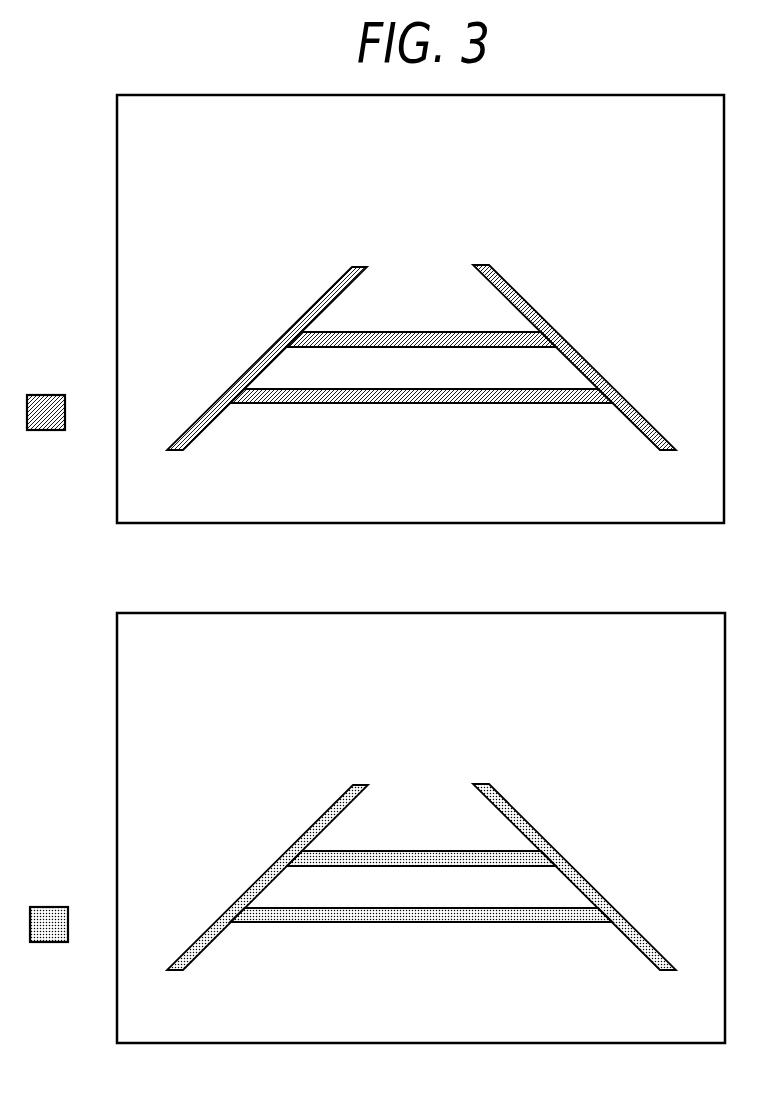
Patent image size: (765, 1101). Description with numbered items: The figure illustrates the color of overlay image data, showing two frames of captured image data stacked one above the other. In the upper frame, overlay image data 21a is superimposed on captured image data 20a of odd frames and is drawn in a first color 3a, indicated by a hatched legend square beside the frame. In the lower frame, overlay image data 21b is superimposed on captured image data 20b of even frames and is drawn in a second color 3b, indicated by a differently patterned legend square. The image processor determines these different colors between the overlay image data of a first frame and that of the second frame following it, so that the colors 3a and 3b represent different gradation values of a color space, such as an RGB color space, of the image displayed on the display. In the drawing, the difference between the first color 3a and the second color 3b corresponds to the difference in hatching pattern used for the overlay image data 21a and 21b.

The captured image data of odd frames 20a is at (117, 281).
The overlay image data superimposed on odd frames 21a is at (257, 365).
The first color 3a is at (197, 421).
The captured image data of even frames 20b is at (117, 836).
The overlay image data superimposed on even frames 21b is at (253, 887).
The second color 3b is at (202, 933).